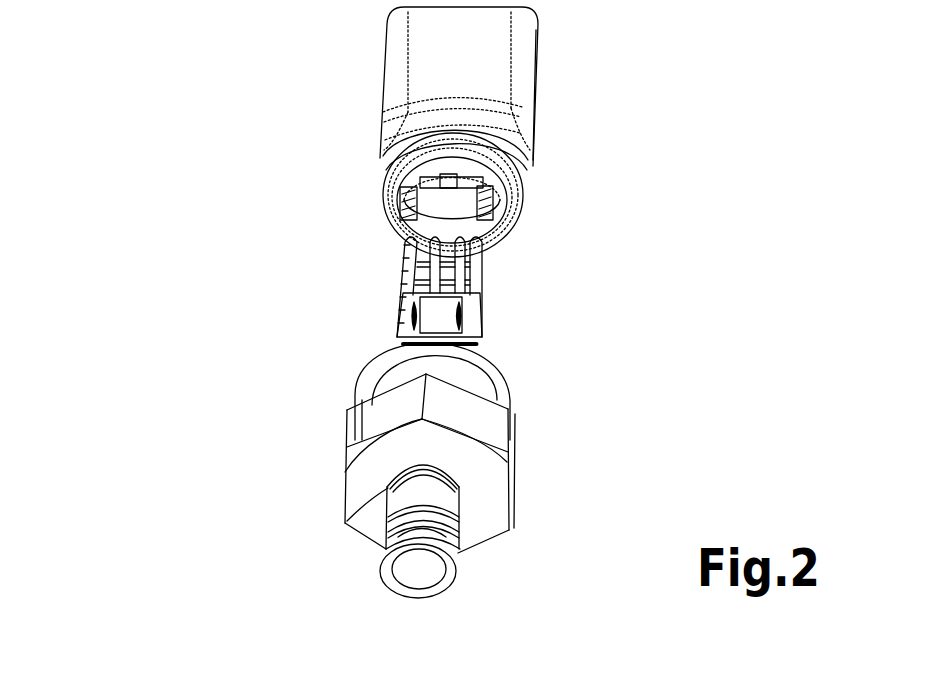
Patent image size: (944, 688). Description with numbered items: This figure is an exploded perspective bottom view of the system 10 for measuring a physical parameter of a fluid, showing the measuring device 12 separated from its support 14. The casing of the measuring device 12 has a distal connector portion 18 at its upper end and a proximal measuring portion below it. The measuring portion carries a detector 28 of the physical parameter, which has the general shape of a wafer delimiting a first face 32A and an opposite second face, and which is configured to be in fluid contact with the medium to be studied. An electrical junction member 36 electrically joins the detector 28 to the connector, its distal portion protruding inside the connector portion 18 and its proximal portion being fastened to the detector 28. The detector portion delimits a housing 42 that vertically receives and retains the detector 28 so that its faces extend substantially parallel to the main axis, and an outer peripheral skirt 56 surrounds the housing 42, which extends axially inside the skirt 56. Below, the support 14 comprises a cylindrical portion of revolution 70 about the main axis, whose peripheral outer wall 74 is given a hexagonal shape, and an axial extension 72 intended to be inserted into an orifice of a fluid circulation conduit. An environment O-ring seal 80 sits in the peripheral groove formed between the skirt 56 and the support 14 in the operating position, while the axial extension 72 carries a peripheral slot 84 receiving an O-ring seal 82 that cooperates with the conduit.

The system 10 is at (190, 97).
The measuring device 12 is at (384, 82).
The support 14 is at (345, 468).
The distal connector portion 18 is at (535, 96).
The detector 28 is at (395, 310).
The first face 32A is at (483, 330).
The electrical junction member 36 is at (402, 285).
The housing 42 is at (450, 237).
The outer peripheral skirt 56 is at (384, 199).
The cylindrical portion of revolution 70 is at (478, 425).
The axial extension 72 is at (450, 495).
The peripheral outer wall 74 is at (492, 440).
The environment O-ring seal 80 is at (362, 382).
The O-ring seal 82 is at (388, 525).
The peripheral slot 84 is at (450, 588).